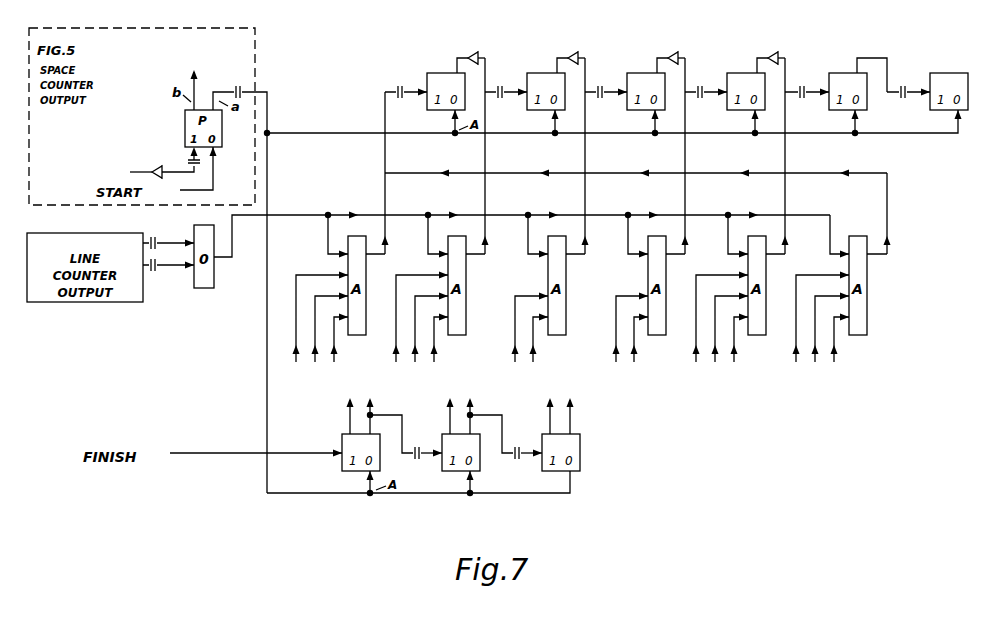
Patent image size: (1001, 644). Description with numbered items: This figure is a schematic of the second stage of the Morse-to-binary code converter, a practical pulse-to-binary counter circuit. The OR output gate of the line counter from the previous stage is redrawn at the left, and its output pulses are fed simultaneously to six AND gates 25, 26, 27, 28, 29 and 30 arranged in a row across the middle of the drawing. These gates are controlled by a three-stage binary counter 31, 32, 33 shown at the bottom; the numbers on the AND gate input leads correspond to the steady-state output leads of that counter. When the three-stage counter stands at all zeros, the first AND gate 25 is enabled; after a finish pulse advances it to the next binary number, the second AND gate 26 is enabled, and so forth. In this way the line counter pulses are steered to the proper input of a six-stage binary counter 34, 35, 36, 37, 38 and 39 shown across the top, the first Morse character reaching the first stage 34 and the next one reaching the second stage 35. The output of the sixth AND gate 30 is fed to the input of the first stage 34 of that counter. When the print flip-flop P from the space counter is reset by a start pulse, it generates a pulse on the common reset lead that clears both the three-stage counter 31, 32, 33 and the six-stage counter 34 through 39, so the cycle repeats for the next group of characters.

The first AND gate 25 is at (352, 331).
The second AND gate 26 is at (452, 331).
The third AND gate 27 is at (552, 331).
The fourth AND gate 28 is at (652, 331).
The fifth AND gate 29 is at (752, 331).
The sixth AND gate 30 is at (853, 331).
The first stage of three-stage binary counter 31 is at (348, 438).
The second stage of three-stage binary counter 32 is at (448, 438).
The third stage of three-stage binary counter 33 is at (548, 438).
The first stage of six-stage binary counter 34 is at (441, 80).
The second stage of six-stage binary counter 35 is at (541, 80).
The third stage of six-stage binary counter 36 is at (641, 80).
The fourth stage of six-stage binary counter 37 is at (741, 80).
The fifth stage of six-stage binary counter 38 is at (842, 80).
The sixth stage of six-stage binary counter 39 is at (943, 80).